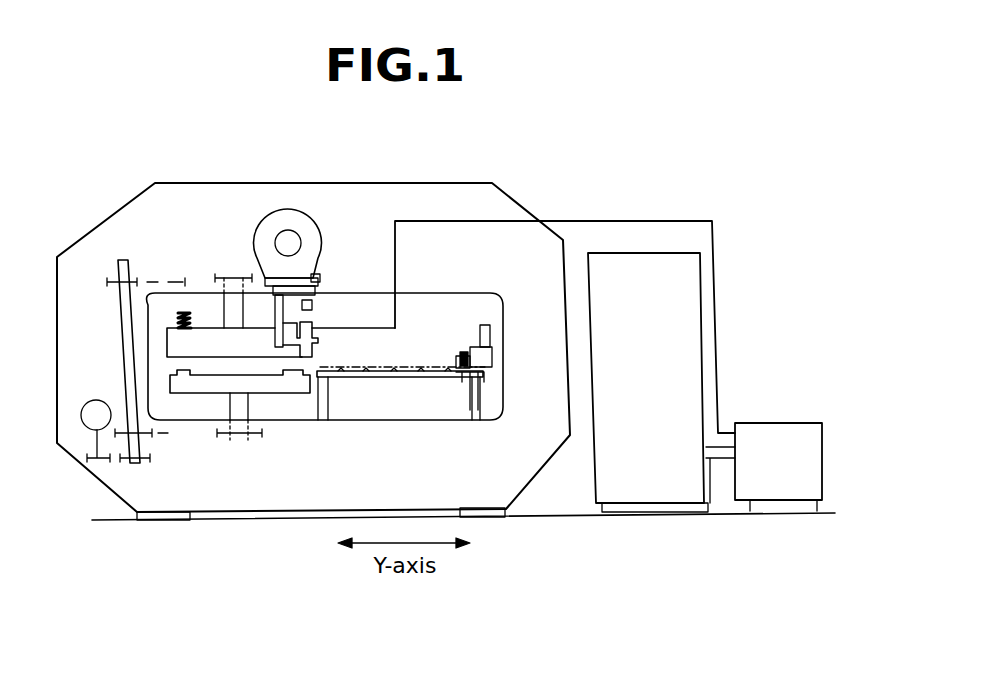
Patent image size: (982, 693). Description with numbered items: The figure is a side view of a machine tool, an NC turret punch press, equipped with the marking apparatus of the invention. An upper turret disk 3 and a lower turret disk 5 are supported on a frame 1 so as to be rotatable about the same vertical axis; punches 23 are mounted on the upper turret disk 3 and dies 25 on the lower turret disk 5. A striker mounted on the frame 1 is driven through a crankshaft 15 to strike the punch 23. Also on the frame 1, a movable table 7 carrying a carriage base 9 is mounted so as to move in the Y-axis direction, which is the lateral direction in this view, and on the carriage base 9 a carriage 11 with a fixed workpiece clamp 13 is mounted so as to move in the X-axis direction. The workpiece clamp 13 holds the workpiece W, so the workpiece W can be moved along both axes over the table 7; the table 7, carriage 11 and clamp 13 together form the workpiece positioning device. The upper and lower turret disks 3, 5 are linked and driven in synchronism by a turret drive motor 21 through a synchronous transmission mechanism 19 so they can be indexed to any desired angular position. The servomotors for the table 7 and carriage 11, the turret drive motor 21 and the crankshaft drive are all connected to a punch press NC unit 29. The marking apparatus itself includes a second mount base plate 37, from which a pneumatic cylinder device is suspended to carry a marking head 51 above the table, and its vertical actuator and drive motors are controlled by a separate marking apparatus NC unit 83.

The frame 1 is at (493, 197).
The upper turret disk 3 is at (208, 347).
The lower turret disk 5 is at (293, 388).
The movable table 7 is at (392, 378).
The carriage base 9 is at (492, 354).
The carriage 11 is at (458, 376).
The workpiece clamp 13 is at (468, 351).
The crankshaft 15 is at (289, 243).
The synchronous transmission mechanism 19 is at (125, 334).
The turret drive motor 21 is at (95, 400).
The punch 23 is at (185, 312).
The die 25 is at (192, 390).
The punch press NC unit 29 is at (687, 318).
The second mount base plate 37 is at (318, 278).
The marking head 51 is at (325, 345).
The marking apparatus NC unit 83 is at (793, 447).
The workpiece W is at (368, 366).